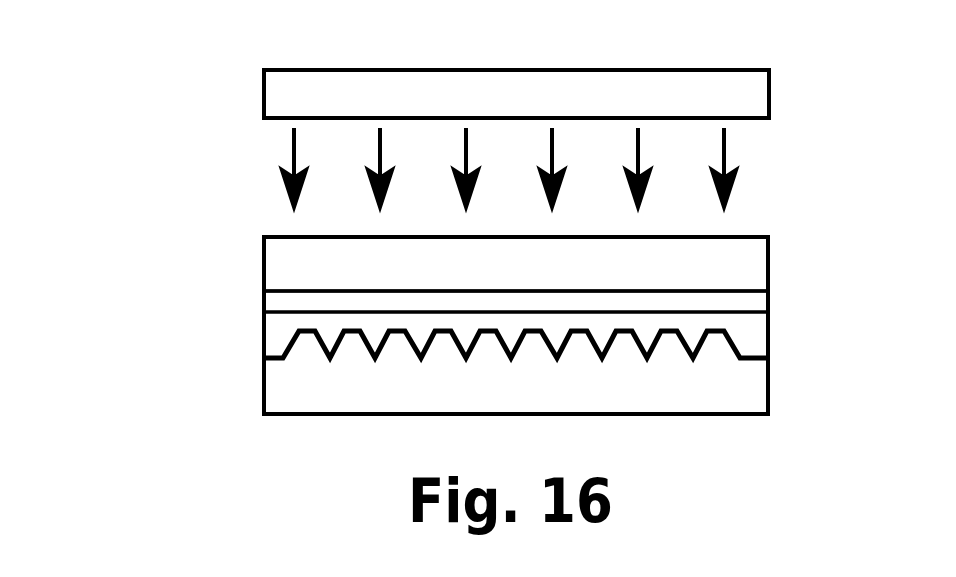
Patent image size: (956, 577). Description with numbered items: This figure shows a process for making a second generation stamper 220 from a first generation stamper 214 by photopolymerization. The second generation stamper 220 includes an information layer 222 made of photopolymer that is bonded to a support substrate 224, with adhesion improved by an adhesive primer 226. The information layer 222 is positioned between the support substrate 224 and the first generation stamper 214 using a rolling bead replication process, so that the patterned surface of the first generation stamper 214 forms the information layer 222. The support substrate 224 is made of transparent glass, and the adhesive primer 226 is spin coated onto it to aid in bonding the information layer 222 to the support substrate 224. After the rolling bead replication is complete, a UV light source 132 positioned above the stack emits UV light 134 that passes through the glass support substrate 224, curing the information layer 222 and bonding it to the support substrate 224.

The UV light source 132 is at (548, 70).
The UV light 134 is at (725, 148).
The first generation stamper 214 is at (224, 407).
The second generation stamper 220 is at (235, 325).
The information layer 222 is at (755, 323).
The support substrate 224 is at (755, 255).
The adhesive primer 226 is at (752, 296).